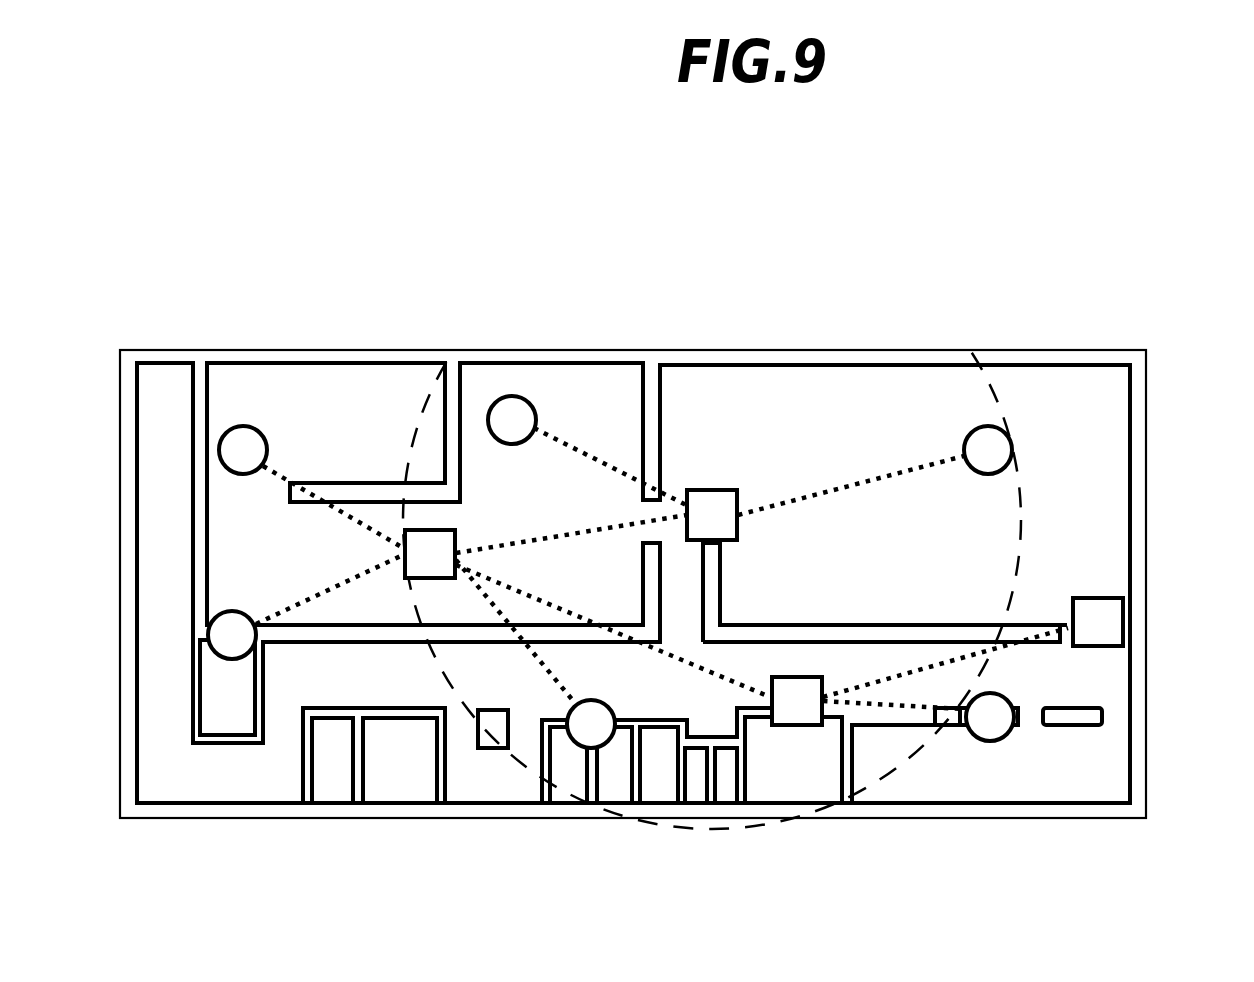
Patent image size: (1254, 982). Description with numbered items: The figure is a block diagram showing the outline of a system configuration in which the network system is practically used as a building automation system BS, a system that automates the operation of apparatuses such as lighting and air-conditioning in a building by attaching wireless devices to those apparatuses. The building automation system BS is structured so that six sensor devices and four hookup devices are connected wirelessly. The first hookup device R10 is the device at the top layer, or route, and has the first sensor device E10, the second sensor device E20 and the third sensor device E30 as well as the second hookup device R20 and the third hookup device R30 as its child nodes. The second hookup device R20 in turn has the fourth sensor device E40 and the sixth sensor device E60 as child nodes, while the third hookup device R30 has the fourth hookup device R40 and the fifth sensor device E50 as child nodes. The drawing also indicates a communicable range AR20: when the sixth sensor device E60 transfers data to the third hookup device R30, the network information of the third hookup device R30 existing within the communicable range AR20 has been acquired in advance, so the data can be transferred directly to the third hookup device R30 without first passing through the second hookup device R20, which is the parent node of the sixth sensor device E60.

The building automation system BS is at (957, 248).
The first sensor device E10 is at (250, 426).
The second sensor device E20 is at (233, 659).
The third sensor device E30 is at (605, 748).
The fourth sensor device E40 is at (520, 396).
The fifth sensor device E50 is at (992, 741).
The sixth sensor device E60 is at (974, 427).
The first hookup device R10 is at (426, 530).
The second hookup device R20 is at (718, 490).
The third hookup device R30 is at (797, 725).
The fourth hookup device R40 is at (1113, 647).
The communicable range AR20 is at (1023, 522).